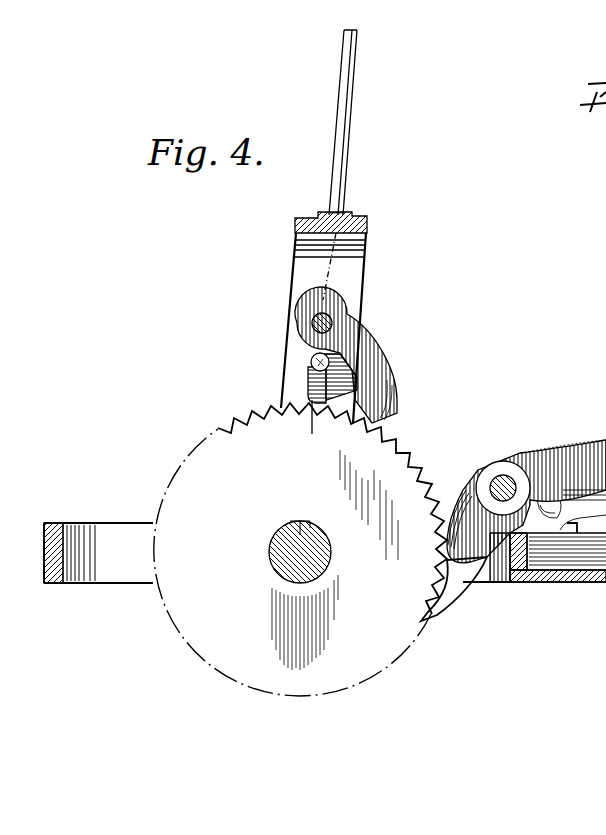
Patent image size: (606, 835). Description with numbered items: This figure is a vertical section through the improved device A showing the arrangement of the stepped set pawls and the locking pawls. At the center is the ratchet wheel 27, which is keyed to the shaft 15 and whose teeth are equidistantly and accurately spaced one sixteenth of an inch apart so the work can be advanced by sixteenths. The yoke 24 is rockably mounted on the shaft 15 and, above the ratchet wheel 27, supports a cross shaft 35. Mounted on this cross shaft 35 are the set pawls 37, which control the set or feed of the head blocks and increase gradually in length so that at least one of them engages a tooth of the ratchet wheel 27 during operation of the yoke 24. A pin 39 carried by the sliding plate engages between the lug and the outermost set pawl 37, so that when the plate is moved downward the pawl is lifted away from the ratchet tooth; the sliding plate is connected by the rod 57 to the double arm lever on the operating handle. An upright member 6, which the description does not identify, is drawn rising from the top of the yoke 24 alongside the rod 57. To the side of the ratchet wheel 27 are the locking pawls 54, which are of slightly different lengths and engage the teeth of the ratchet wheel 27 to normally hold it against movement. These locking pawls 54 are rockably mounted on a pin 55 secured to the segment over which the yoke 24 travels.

The rod 6 is at (337, 117).
The rod 57 is at (343, 196).
The yoke 24 is at (290, 284).
The improved device A is at (347, 291).
The cross shaft 35 is at (331, 323).
The set pawl 37 is at (386, 386).
The pin 39 is at (312, 363).
The slow ratchet wheel 27 is at (388, 468).
The shaft 15 is at (294, 523).
The locking pawl 54 is at (505, 477).
The pin 55 is at (605, 452).